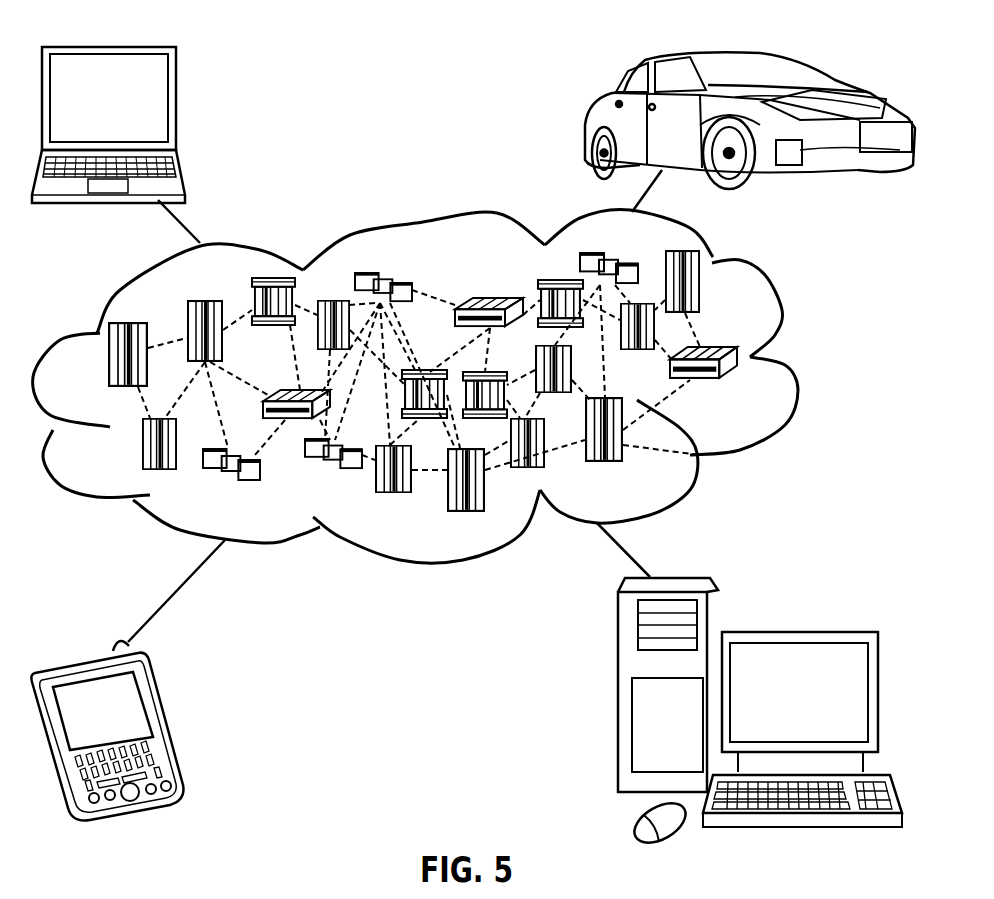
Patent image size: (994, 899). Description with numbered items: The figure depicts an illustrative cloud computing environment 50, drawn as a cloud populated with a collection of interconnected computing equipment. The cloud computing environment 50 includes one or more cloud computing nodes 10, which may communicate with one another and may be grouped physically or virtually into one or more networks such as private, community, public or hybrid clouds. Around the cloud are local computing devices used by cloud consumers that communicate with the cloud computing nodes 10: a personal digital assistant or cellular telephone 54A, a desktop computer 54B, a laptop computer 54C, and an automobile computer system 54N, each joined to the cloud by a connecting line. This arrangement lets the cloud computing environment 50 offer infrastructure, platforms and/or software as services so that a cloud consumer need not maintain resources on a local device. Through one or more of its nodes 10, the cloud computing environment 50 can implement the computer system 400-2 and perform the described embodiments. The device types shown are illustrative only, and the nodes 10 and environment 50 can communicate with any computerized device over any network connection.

The cloud computing node 10 is at (752, 390).
The cloud computing environment 50 is at (797, 360).
The personal digital assistant or cellular telephone 54A is at (163, 723).
The desktop computer 54B is at (798, 630).
The laptop computer 54C is at (176, 107).
The automobile computer system 54N is at (589, 126).
The computer system 400-2 is at (411, 624).